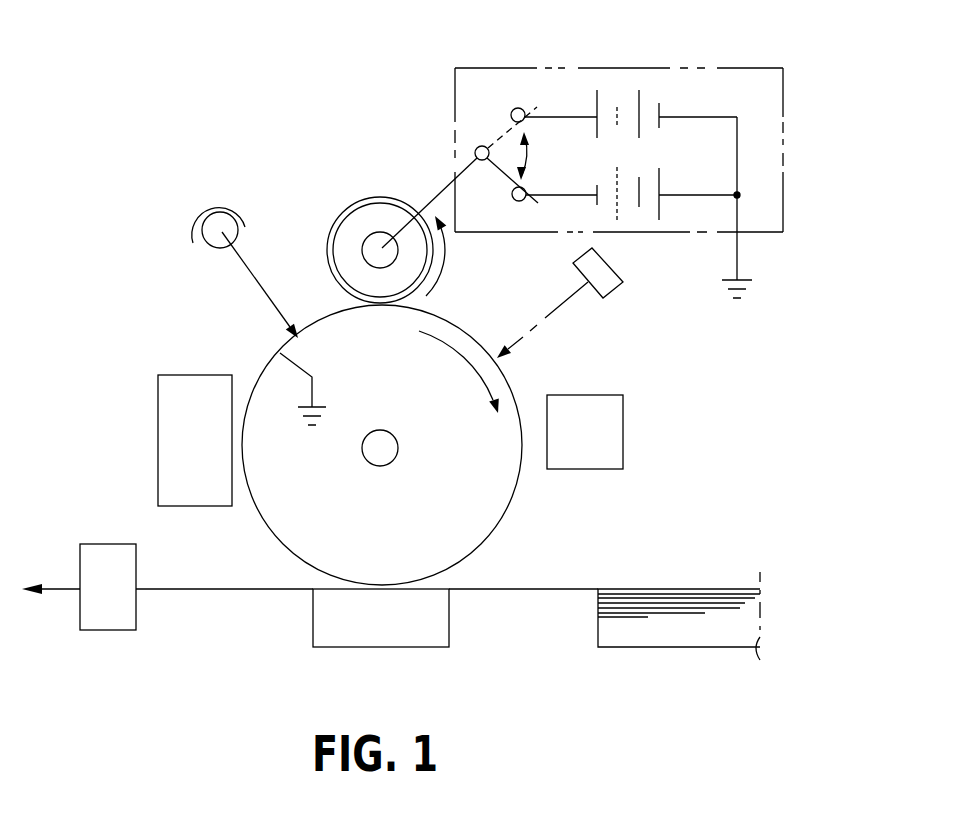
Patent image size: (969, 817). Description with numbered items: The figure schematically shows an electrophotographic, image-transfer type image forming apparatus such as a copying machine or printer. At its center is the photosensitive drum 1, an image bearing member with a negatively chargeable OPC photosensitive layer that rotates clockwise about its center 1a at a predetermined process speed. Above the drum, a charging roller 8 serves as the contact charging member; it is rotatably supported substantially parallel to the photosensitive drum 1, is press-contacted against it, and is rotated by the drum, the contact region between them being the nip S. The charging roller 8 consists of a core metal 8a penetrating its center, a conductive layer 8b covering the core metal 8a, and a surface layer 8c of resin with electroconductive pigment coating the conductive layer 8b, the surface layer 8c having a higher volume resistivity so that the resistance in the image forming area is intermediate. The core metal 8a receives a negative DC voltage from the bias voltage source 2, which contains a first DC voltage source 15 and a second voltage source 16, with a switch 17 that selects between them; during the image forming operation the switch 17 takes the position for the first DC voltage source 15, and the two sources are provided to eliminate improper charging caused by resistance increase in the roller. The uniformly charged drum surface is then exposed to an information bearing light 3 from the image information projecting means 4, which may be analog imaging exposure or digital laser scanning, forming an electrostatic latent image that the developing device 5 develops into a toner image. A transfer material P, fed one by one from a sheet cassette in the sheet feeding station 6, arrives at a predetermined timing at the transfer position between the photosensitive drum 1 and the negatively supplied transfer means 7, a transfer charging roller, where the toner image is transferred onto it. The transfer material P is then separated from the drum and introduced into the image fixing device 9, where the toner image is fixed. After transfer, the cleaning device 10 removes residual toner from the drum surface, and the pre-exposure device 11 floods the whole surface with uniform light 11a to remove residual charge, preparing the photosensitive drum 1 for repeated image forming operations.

The photosensitive drum 1 is at (465, 332).
The center 1a is at (388, 450).
The bias voltage source 2 is at (675, 68).
The information bearing light 3 is at (573, 298).
The image information projecting means 4 is at (610, 287).
The developing device 5 is at (615, 440).
The paper feed tray 6 is at (685, 637).
The transfer means 7 is at (383, 633).
The charging roller 8 is at (369, 196).
The core metal 8a is at (375, 247).
The conductive layer 8b is at (378, 208).
The surface layer 8c is at (380, 222).
The image fixing device 9 is at (104, 622).
The cleaning device 10 is at (170, 436).
The pre-exposure device 11 is at (215, 243).
The uniform light 11a is at (253, 282).
The first DC voltage source 15 is at (640, 220).
The second voltage source 16 is at (625, 98).
The switch 17 is at (500, 148).
The nip S is at (380, 307).
The transfer material P is at (695, 598).